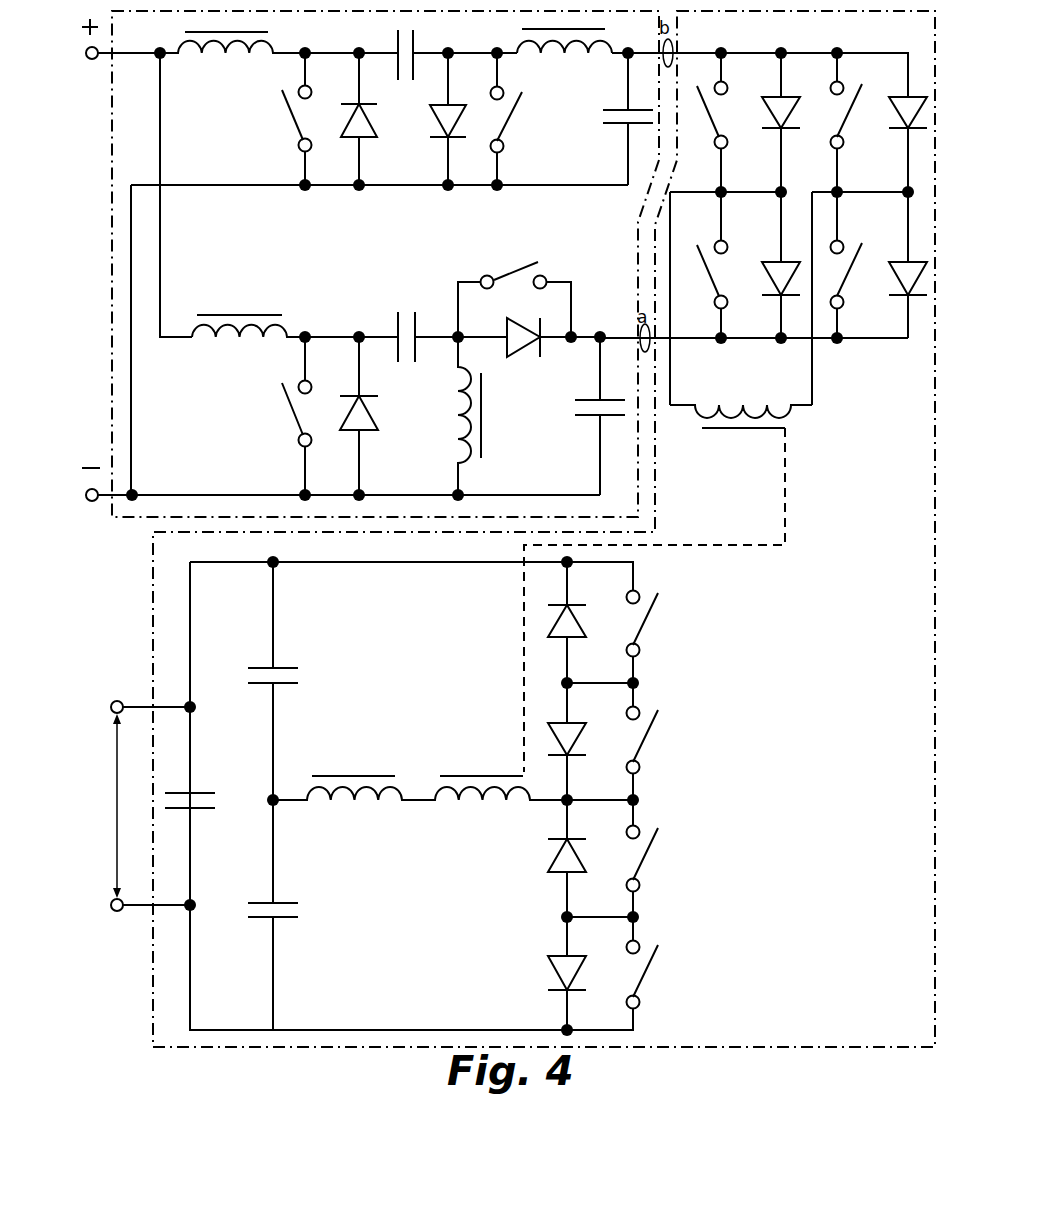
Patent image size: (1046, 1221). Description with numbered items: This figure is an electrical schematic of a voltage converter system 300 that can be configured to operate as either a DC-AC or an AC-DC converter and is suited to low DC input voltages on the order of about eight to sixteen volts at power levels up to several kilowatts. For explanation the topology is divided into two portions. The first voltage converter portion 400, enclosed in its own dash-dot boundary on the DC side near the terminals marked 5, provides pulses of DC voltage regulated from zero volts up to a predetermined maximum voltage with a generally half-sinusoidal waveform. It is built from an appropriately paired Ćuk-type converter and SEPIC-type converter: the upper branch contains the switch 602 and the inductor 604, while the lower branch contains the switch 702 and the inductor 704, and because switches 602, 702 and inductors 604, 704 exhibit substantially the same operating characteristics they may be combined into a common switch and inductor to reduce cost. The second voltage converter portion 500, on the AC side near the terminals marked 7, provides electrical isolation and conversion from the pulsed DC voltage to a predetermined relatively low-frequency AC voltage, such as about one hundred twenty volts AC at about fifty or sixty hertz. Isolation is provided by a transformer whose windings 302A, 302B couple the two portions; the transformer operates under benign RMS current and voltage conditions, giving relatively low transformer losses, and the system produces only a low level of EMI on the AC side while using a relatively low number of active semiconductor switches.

The DC terminals 5 is at (112, 182).
The AC terminals 7 is at (149, 942).
The voltage converter system 300 is at (136, 985).
The transformer winding 302A is at (793, 420).
The transformer winding 302B is at (481, 763).
The first voltage converter portion 400 is at (128, 517).
The second voltage converter portion 500 is at (153, 621).
The switch 602 is at (292, 116).
The inductor 604 is at (229, 58).
The switch 702 is at (291, 406).
The inductor 704 is at (228, 350).